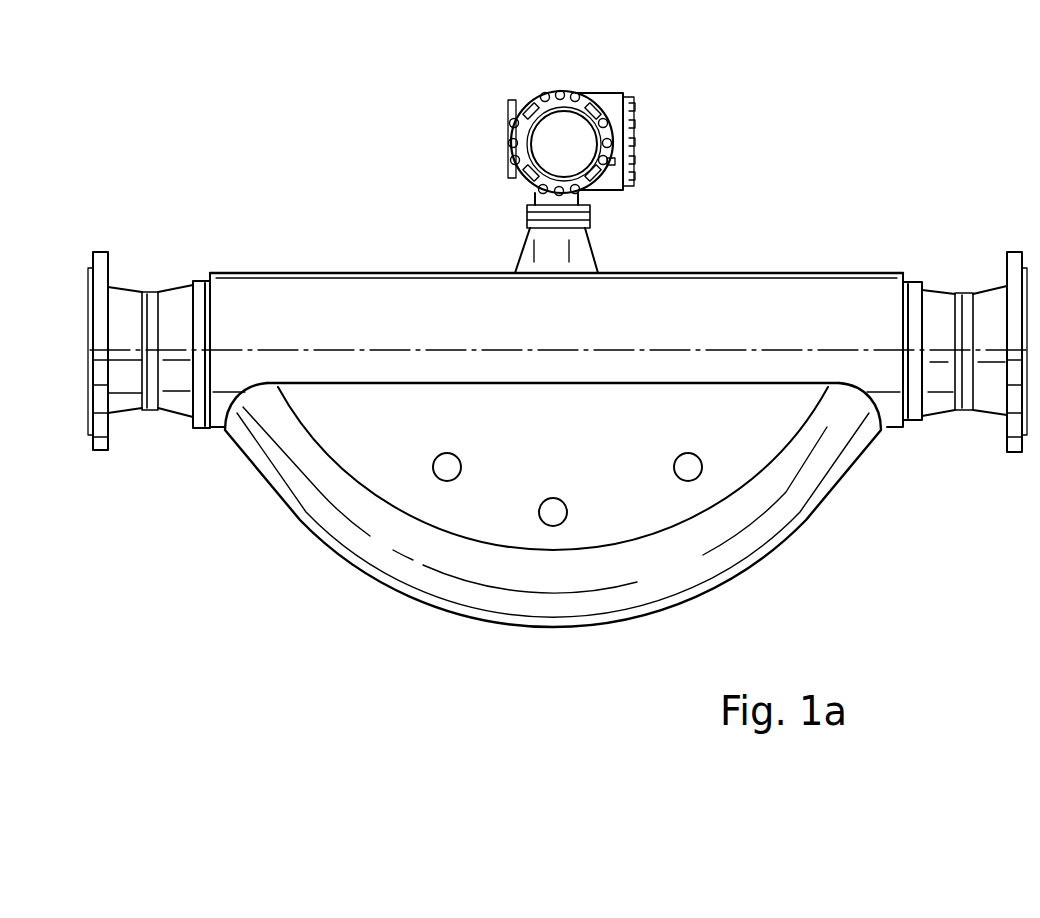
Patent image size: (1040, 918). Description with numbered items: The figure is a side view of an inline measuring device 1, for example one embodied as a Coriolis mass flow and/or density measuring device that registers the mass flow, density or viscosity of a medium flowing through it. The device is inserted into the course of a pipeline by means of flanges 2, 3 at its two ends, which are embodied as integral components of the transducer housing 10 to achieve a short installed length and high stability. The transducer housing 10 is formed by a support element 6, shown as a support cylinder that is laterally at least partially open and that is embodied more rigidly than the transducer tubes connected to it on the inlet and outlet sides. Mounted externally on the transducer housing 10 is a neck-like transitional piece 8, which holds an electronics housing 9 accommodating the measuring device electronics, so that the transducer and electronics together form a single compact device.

The inline measuring device 1 is at (559, 330).
The flange 2 is at (104, 252).
The flange 3 is at (1016, 250).
The support element 6 is at (352, 292).
The transitional piece 8 is at (600, 253).
The electronics housing 9 is at (605, 90).
The transducer housing 10 is at (302, 572).